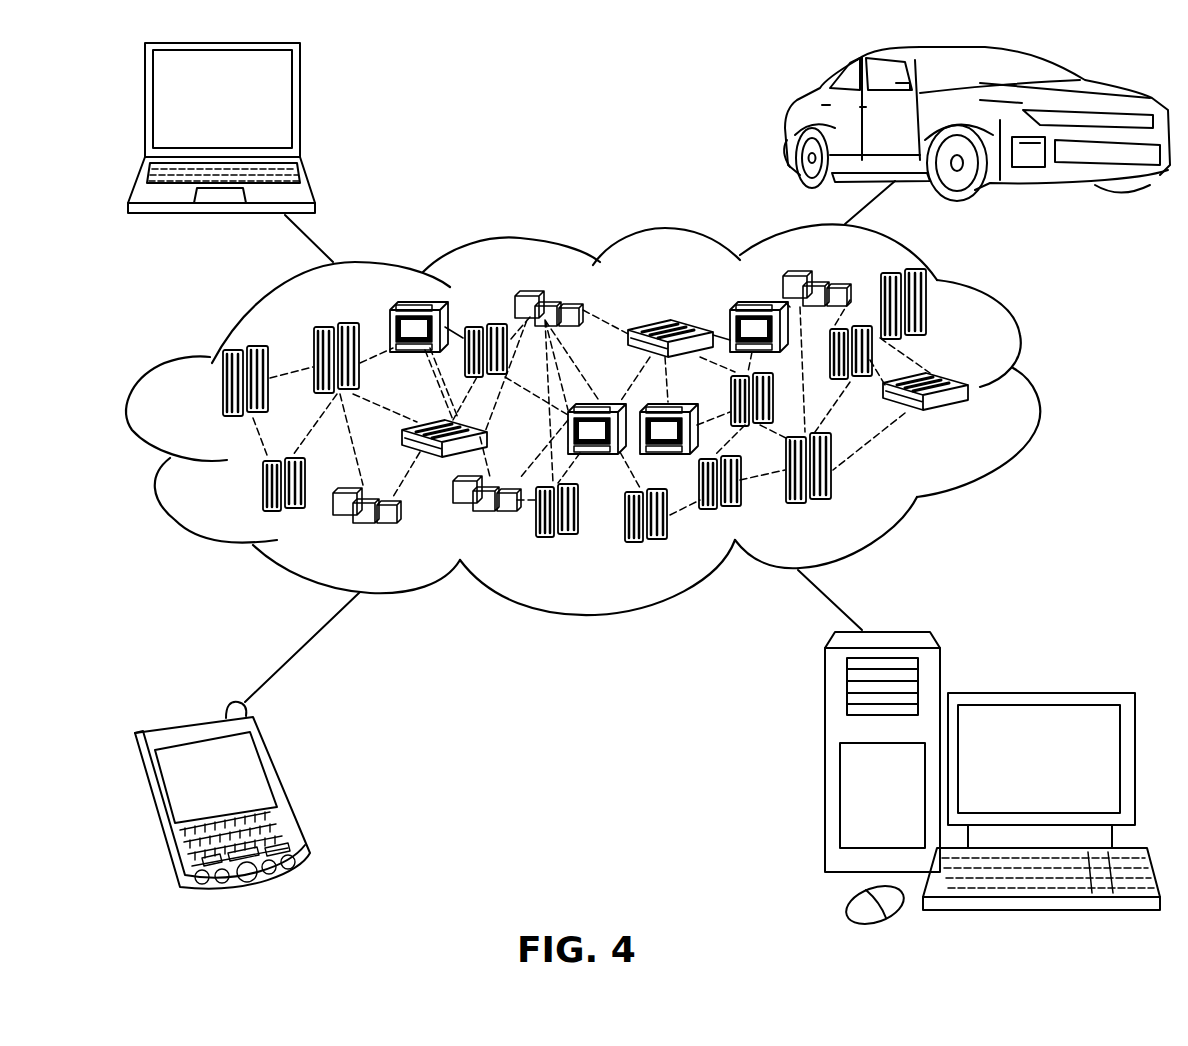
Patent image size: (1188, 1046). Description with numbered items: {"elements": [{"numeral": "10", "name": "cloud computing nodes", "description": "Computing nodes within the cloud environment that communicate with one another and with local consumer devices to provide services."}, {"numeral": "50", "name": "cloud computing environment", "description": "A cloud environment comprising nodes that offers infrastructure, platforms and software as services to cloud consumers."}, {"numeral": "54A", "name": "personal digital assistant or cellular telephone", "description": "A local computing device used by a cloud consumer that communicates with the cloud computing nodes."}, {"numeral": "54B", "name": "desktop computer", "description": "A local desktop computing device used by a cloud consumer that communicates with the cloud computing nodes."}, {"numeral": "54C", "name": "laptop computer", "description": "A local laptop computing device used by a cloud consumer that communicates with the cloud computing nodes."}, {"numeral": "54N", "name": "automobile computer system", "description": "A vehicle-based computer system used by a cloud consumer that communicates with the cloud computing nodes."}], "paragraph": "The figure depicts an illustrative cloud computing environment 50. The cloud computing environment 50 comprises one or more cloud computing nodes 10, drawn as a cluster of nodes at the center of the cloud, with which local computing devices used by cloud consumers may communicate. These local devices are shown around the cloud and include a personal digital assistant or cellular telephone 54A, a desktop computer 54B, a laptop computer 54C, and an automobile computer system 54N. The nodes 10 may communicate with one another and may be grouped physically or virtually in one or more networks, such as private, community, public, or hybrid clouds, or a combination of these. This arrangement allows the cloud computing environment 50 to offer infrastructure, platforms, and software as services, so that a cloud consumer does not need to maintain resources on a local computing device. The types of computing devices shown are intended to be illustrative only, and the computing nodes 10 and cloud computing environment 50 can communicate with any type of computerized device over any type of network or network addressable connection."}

The cloud computing nodes 10 is at (970, 422).
The cloud computing environment 50 is at (1040, 386).
The personal digital assistant or cellular telephone 54A is at (287, 790).
The desktop computer 54B is at (1038, 693).
The laptop computer 54C is at (300, 108).
The automobile computer system 54N is at (792, 118).